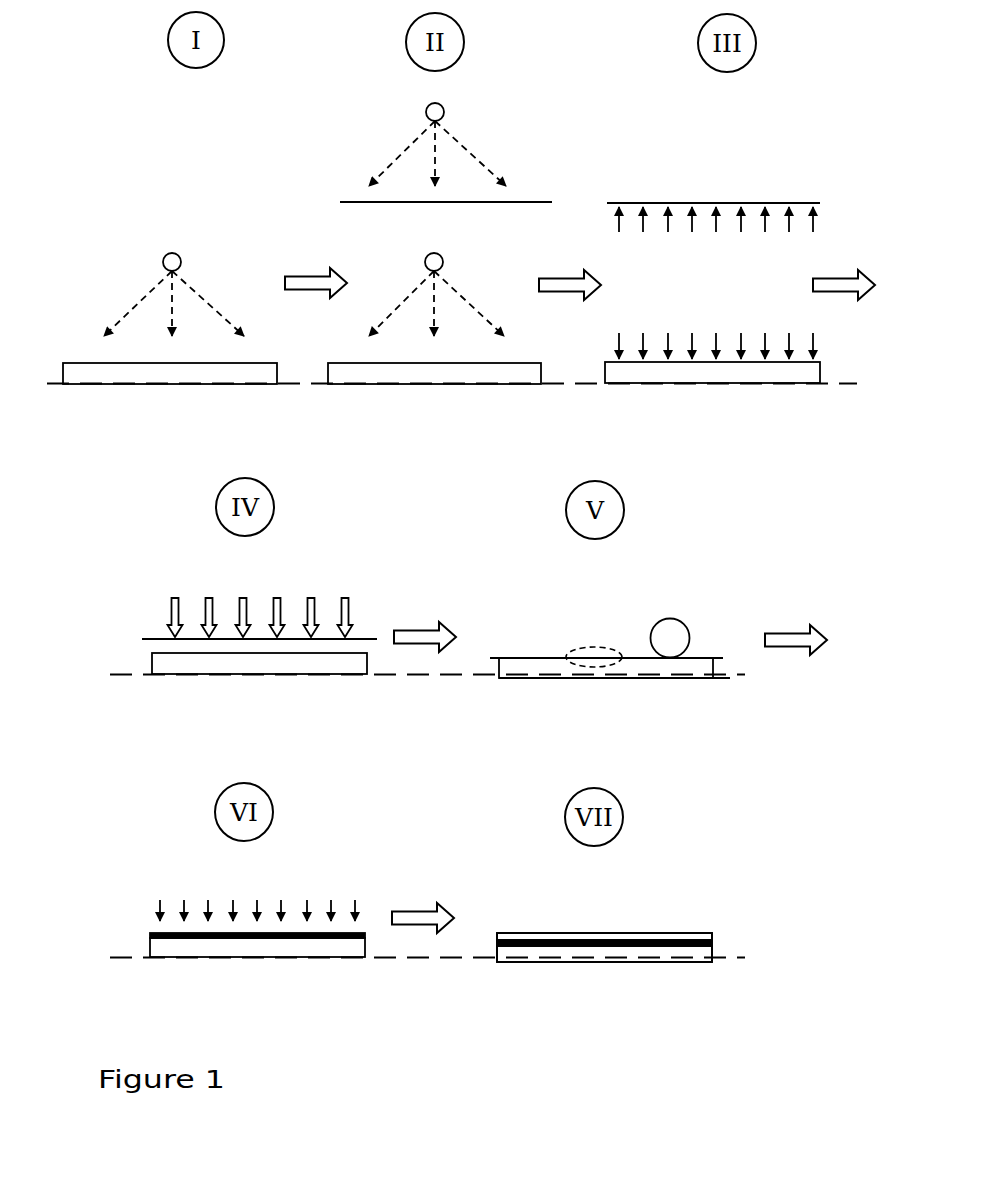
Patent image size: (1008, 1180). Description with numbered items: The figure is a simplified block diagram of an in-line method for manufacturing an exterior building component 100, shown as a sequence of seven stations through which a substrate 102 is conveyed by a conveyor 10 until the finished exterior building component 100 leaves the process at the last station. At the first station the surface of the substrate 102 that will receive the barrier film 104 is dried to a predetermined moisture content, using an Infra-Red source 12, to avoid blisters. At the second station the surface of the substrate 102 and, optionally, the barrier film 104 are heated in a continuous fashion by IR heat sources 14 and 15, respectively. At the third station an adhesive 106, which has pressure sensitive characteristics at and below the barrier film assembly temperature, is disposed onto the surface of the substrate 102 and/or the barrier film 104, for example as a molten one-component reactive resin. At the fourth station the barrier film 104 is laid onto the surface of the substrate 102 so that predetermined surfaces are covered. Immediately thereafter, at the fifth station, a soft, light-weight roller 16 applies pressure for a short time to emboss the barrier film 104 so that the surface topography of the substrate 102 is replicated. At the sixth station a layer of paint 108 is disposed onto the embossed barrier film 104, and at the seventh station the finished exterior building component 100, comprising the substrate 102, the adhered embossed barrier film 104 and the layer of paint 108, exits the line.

The conveyor 10 is at (843, 387).
The Infra-Red (IR) source 12 is at (163, 262).
The IR heat source 14 is at (425, 261).
The IR heat source 15 is at (426, 111).
The roller 16 is at (678, 630).
The exterior building component 100 is at (716, 907).
The substrate 102 is at (178, 383).
The barrier film 104 is at (517, 201).
The adhesive 106 is at (723, 229).
The layer of paint 108 is at (270, 907).